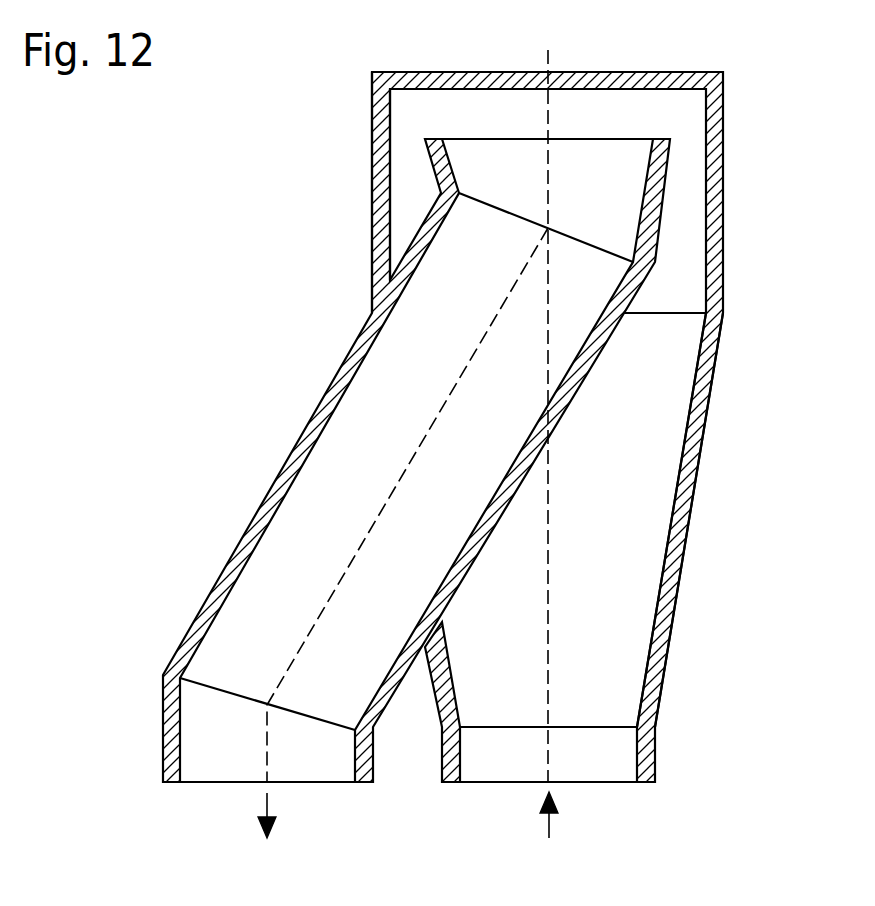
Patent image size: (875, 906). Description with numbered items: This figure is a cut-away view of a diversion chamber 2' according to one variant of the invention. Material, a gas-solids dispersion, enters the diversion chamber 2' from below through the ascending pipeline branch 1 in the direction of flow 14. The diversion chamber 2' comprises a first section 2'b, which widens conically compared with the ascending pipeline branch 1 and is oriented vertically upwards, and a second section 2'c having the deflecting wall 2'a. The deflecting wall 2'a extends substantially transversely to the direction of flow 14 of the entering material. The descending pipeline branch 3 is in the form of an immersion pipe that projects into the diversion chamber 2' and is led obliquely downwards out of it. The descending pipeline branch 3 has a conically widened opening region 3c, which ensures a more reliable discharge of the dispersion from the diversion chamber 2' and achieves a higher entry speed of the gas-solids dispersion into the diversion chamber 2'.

The diversion chamber 2' is at (443, 427).
The deflecting wall 2'a is at (623, 130).
The first section 2'b is at (704, 520).
The second section 2'c is at (352, 192).
The descending pipeline branch 3 is at (218, 733).
The conically widened opening region 3c is at (658, 230).
The ascending pipeline branch 1 is at (617, 750).
The direction of flow 14 is at (550, 827).